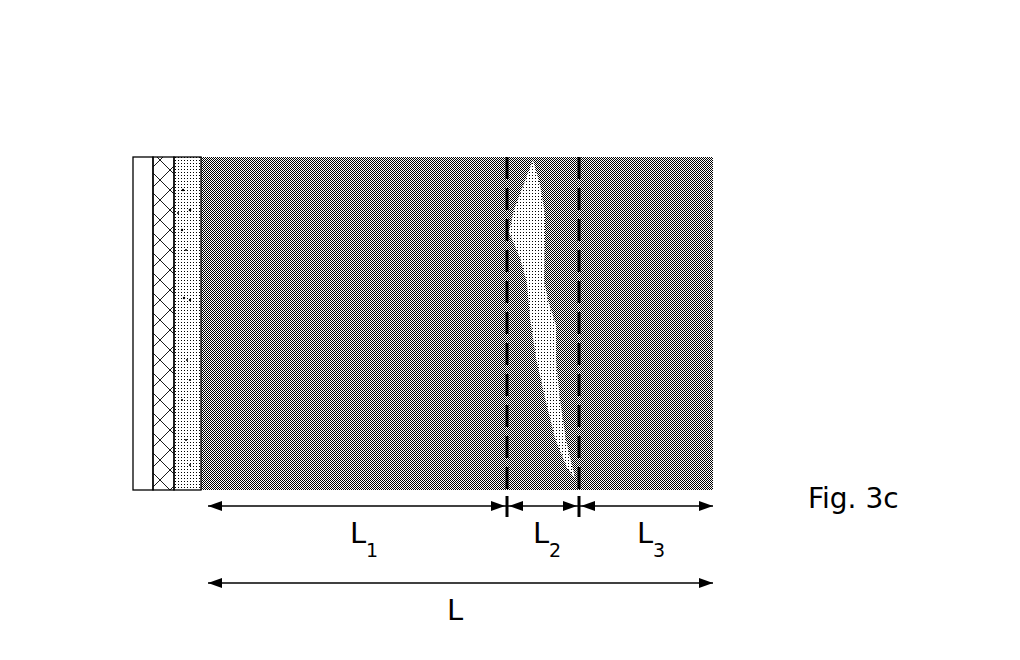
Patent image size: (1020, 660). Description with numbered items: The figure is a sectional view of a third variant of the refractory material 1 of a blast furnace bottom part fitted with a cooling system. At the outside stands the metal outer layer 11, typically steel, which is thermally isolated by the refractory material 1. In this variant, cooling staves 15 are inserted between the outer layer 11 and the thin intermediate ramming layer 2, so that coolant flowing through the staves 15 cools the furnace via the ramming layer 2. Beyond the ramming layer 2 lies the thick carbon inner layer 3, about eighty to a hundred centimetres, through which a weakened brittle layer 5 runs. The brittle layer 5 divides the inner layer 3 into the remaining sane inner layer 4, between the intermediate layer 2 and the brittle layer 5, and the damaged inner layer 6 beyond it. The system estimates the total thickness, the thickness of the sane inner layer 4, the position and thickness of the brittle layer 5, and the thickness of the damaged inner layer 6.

The refractory material 1 is at (493, 254).
The intermediate ramming layer 2 is at (193, 190).
The inner layer 3 is at (426, 152).
The sane inner layer 4 is at (326, 182).
The brittle layer 5 is at (526, 213).
The damaged inner layer 6 is at (680, 230).
The outer layer 11 is at (140, 266).
The cooling staves 15 is at (165, 448).